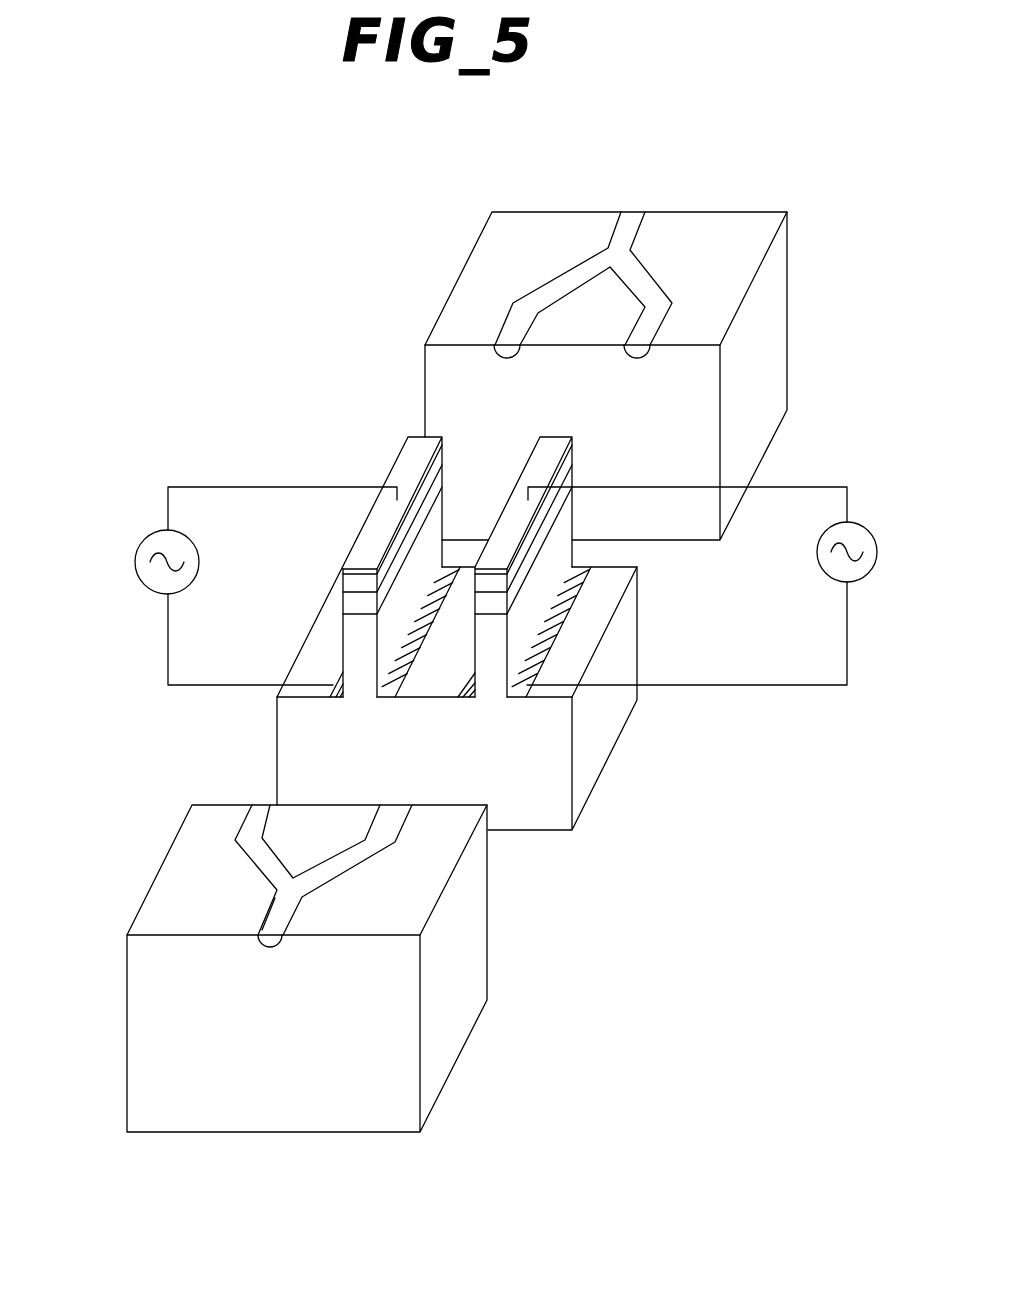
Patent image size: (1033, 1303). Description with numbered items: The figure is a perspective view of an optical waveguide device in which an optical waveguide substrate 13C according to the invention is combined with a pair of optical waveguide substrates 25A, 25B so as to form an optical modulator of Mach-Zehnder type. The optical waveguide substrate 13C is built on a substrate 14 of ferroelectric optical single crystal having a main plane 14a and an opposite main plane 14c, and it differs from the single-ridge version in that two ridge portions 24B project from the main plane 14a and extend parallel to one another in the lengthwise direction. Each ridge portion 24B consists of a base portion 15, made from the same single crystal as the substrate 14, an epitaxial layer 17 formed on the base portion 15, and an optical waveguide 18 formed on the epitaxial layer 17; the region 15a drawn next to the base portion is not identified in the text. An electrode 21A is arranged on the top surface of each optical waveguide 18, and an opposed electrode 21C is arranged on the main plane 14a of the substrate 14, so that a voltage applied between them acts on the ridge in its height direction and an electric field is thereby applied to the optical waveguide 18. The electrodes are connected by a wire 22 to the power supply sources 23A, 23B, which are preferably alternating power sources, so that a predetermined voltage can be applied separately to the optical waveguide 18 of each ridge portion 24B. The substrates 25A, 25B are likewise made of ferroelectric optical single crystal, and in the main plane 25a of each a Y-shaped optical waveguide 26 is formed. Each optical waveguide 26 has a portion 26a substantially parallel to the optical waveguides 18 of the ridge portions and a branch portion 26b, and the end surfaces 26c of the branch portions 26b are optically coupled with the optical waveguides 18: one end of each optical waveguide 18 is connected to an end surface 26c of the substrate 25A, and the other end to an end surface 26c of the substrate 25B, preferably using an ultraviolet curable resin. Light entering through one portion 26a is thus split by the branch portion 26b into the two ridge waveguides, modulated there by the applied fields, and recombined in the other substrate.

The optical waveguide substrate 13C is at (680, 601).
The substrate 14 is at (654, 671).
The main plane 14a is at (612, 592).
The other main plane 14c is at (552, 832).
The base portion 15 is at (500, 657).
The surface of magnetic layer 15a is at (537, 622).
The epitaxial layer 17 is at (352, 608).
The optical waveguide 18 is at (352, 587).
The electrode 21A is at (368, 537).
The electrode 21C is at (528, 698).
The wire 22 is at (268, 485).
The power supply source 23A is at (150, 540).
The power supply source 23B is at (855, 523).
The ridge portion 24B is at (397, 426).
The optical waveguide substrate 25A is at (796, 226).
The optical waveguide substrate 25B is at (511, 955).
The main plane 25a is at (722, 230).
The optical waveguide 26 is at (604, 229).
The portion 26a is at (288, 918).
The branch portion 26b is at (378, 830).
The end surface 26c is at (647, 357).